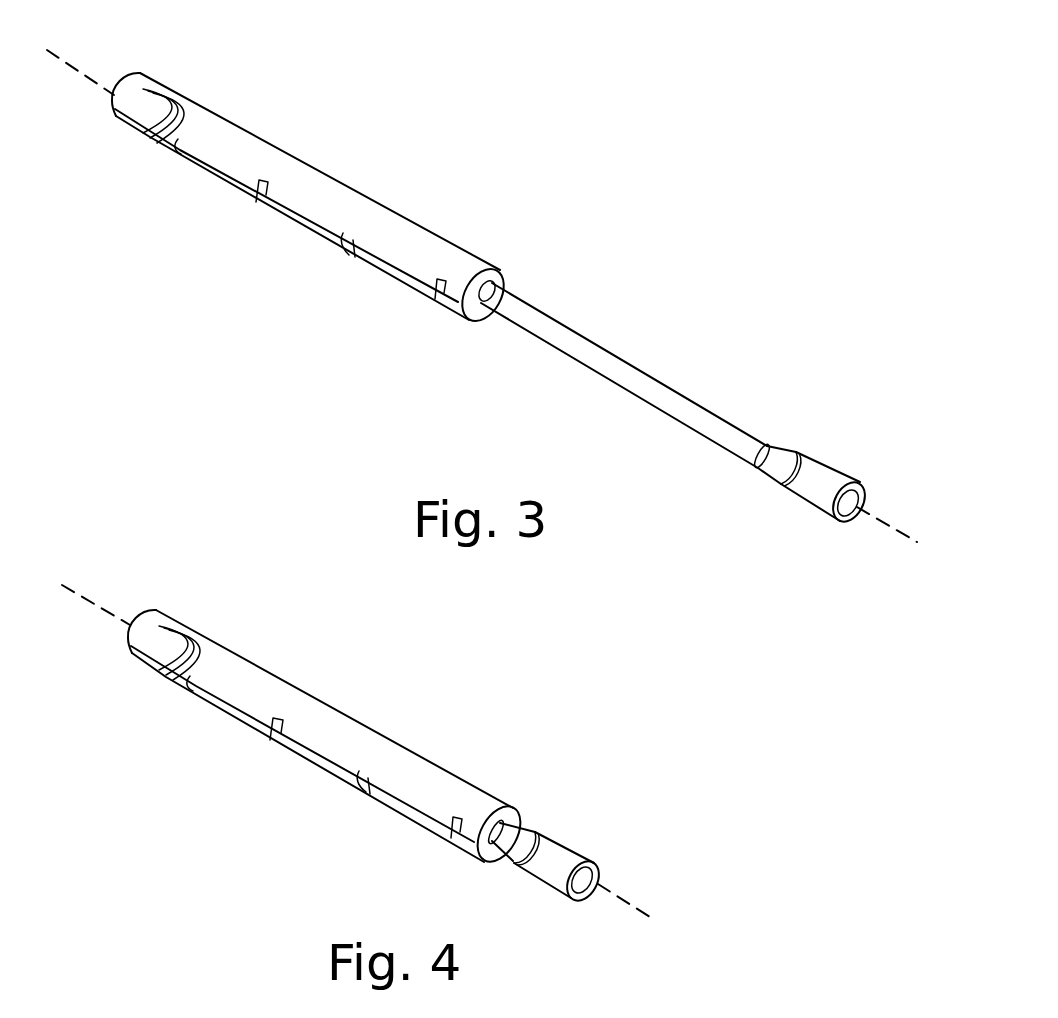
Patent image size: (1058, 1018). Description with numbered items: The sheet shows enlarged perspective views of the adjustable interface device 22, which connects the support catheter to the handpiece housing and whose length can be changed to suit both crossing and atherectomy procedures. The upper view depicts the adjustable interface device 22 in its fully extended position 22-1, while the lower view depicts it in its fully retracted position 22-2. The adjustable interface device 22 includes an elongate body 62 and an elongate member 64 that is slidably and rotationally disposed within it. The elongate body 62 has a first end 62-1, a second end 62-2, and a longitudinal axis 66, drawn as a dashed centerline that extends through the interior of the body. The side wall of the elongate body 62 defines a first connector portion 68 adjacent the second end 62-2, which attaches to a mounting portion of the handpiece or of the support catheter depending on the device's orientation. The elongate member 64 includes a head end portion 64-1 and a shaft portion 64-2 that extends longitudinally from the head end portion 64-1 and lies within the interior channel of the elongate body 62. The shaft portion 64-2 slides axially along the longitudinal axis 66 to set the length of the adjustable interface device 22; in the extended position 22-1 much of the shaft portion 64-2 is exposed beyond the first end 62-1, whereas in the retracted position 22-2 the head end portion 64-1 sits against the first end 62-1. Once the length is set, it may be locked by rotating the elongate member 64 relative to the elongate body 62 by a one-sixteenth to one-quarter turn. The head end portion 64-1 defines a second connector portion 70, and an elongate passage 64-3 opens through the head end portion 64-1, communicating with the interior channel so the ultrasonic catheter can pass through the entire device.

In FIG. 3, the adjustable interface device 22 is at (493, 303).
In FIG. 4, the adjustable interface device 22 is at (412, 728).
In FIG. 3, the fully extended position 22-1 is at (565, 257).
In FIG. 4, the fully retracted position 22-2 is at (583, 809).
In FIG. 3, the elongate body 62 is at (306, 165).
In FIG. 4, the elongate body 62 is at (322, 703).
In FIG. 3, the first end 62-1 is at (490, 270).
In FIG. 4, the first end 62-1 is at (510, 806).
In FIG. 3, the second end 62-2 is at (142, 123).
In FIG. 4, the second end 62-2 is at (162, 661).
In FIG. 3, the elongate member 64 is at (710, 401).
In FIG. 4, the elongate member 64 is at (573, 862).
In FIG. 3, the head end portion 64-1 is at (845, 475).
In FIG. 4, the head end portion 64-1 is at (573, 862).
In FIG. 3, the shaft portion 64-2 is at (592, 372).
In FIG. 3, the elongate passage 64-3 is at (856, 517).
In FIG. 4, the elongate passage 64-3 is at (600, 879).
In FIG. 3, the longitudinal axis 66 is at (84, 69).
In FIG. 4, the longitudinal axis 66 is at (101, 607).
In FIG. 3, the first connector portion 68 is at (116, 144).
In FIG. 4, the first connector portion 68 is at (132, 682).
In FIG. 3, the second connector portion 70 is at (879, 487).
In FIG. 4, the second connector portion 70 is at (573, 876).